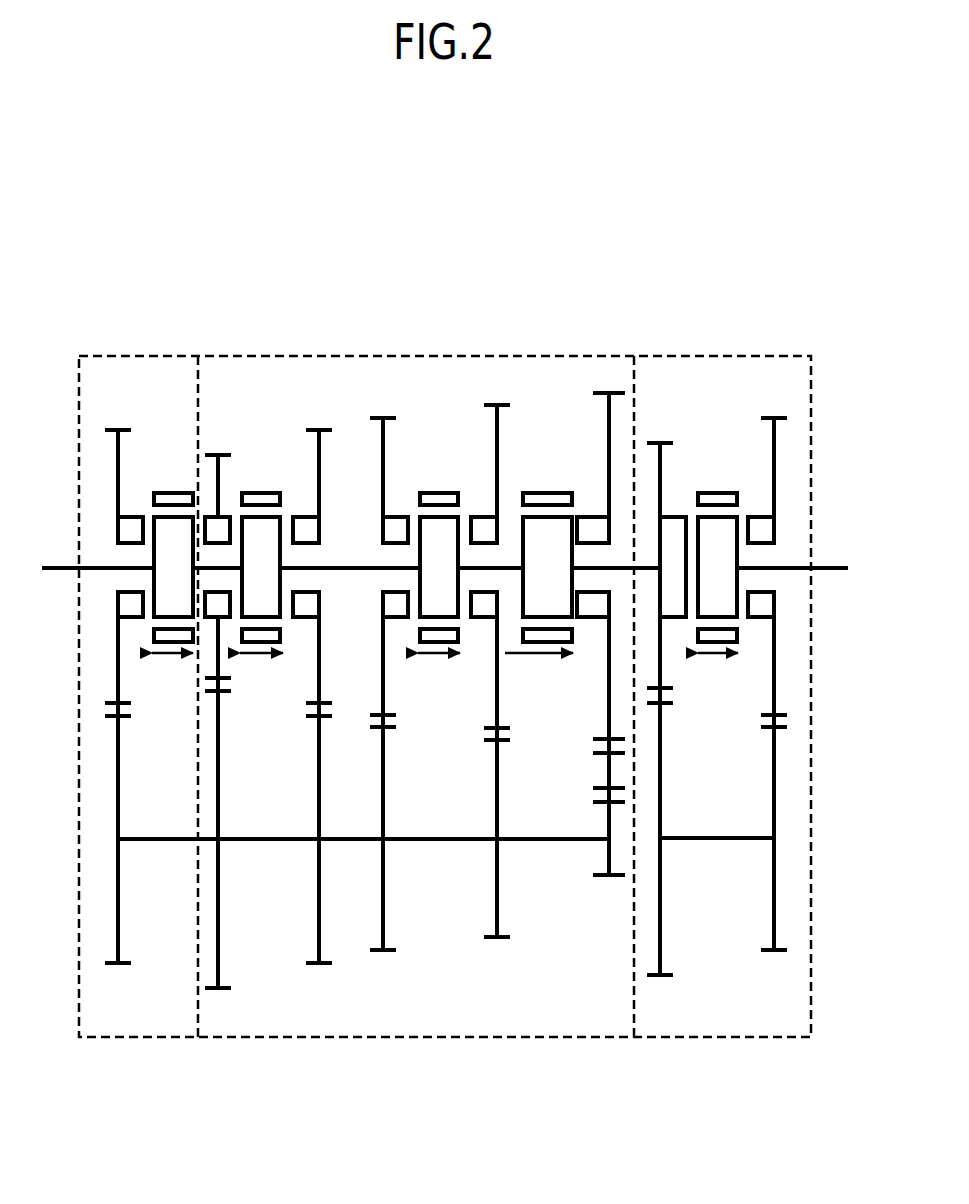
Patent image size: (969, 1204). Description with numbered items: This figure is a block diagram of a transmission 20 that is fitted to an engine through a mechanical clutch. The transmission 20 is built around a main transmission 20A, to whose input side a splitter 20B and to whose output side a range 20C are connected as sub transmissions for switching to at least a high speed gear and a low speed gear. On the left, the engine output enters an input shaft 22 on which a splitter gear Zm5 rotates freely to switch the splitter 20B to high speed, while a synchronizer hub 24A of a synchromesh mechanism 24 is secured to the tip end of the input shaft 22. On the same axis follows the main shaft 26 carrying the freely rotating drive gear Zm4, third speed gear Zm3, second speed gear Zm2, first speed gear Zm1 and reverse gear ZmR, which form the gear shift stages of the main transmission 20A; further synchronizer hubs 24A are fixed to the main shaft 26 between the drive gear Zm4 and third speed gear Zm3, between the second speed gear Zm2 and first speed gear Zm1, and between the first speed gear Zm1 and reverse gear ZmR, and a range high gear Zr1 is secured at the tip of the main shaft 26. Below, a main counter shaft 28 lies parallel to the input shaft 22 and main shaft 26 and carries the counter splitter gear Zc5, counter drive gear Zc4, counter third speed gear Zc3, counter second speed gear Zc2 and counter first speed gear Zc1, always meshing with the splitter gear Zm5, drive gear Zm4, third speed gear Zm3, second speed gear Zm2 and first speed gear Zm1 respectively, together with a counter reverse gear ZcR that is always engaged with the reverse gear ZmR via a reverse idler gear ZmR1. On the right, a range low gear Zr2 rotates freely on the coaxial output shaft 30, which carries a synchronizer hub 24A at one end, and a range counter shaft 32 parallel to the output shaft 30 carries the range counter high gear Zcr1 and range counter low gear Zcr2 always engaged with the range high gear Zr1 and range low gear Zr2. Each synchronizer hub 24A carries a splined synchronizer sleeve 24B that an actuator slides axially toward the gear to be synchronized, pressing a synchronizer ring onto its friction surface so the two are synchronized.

The transmission 20 is at (815, 386).
The main transmission 20A is at (443, 353).
The splitter 20B is at (125, 353).
The range 20C is at (724, 353).
The input shaft 22 is at (64, 565).
The synchromesh mechanism 24 is at (432, 593).
The synchronizer hub 24A is at (168, 577).
The synchronizer sleeve 24B is at (169, 492).
The main shaft 26 is at (336, 558).
The main counter shaft 28 is at (426, 841).
The output shaft 30 is at (822, 566).
The range counter shaft 32 is at (708, 840).
The splitter gear Zm5 is at (118, 428).
The drive gear Zm4 is at (218, 453).
The third speed gear Zm3 is at (319, 428).
The second speed gear Zm2 is at (383, 416).
The first speed gear Zm1 is at (497, 403).
The reverse gear ZmR is at (609, 392).
The reverse idler gear ZmR1 is at (609, 776).
The counter splitter gear Zc5 is at (118, 966).
The counter drive gear Zc4 is at (218, 991).
The counter third speed gear Zc3 is at (319, 966).
The counter second speed gear Zc2 is at (383, 953).
The counter first speed gear Zc1 is at (497, 940).
The counter reverse gear ZcR is at (609, 878).
The range high gear Zr1 is at (660, 441).
The range low gear Zr2 is at (774, 416).
The range counter gear 1 Zcr1 is at (660, 978).
The range counter gear 2 Zcr2 is at (774, 953).